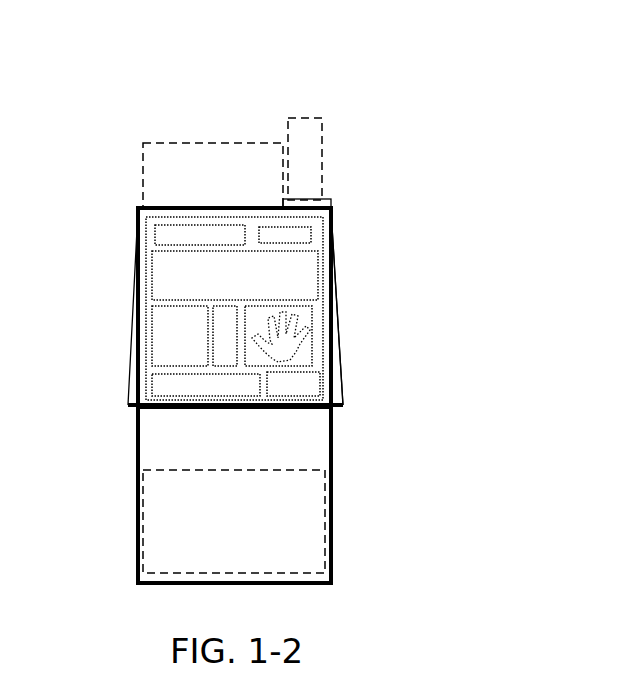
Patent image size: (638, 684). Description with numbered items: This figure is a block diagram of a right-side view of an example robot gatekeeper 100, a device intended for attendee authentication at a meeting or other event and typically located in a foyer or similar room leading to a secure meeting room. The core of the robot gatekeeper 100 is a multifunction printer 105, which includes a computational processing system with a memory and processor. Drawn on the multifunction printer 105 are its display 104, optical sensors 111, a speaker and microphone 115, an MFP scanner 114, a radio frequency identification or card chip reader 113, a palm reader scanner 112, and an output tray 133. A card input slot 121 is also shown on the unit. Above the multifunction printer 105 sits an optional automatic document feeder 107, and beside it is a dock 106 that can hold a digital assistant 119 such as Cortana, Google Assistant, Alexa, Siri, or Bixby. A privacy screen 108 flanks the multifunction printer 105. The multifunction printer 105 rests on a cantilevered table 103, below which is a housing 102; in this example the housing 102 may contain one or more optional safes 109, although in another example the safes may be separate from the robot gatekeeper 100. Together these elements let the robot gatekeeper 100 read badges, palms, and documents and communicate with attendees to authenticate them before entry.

The robot gatekeeper 100 is at (477, 55).
The housing 102 is at (333, 545).
The cantilevered table 103 is at (333, 420).
The display 104 is at (150, 262).
The multifunction printer 105 is at (330, 240).
The dock 106 is at (327, 200).
The automatic document feeder 107 is at (213, 175).
The privacy screen 108 is at (340, 390).
The safe 109 is at (234, 521).
The optical sensors 111 is at (333, 276).
The palm reader scanner 112 is at (313, 350).
The RFID or card chip reader 113 is at (212, 350).
The MFP scanner 114 is at (152, 320).
The speaker and microphone 115 is at (200, 236).
The digital assistant 119 is at (325, 132).
The card input slot 121 is at (293, 384).
The output tray 133 is at (137, 423).